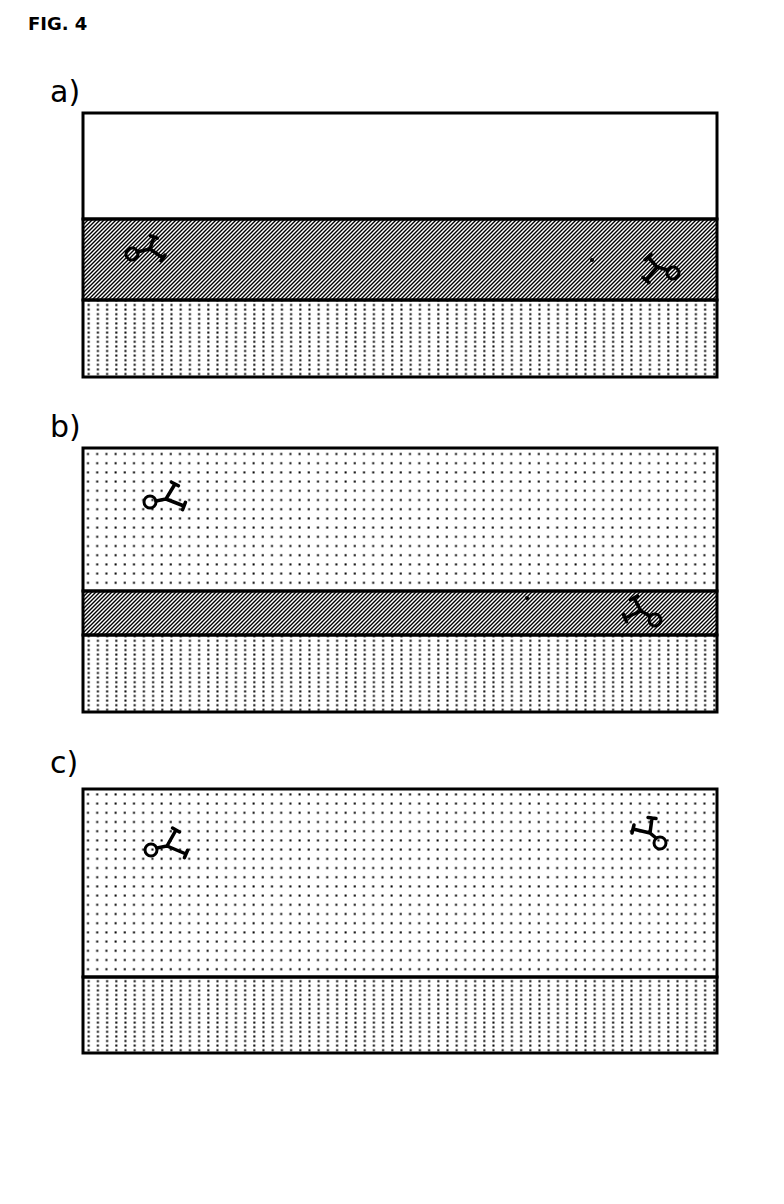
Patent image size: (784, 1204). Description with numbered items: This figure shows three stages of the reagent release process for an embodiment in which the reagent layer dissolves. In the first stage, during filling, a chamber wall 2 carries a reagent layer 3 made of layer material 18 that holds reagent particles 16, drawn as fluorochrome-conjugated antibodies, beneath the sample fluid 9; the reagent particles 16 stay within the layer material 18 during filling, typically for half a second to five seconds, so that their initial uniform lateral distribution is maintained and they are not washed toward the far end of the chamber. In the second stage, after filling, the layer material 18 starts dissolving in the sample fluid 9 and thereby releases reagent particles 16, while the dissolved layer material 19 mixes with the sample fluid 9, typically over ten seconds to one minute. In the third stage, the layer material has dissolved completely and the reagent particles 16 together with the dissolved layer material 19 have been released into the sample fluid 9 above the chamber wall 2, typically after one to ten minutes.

The chamber wall 2 is at (400, 676).
The reagent layer 3 is at (418, 259).
The sample fluid 9 is at (400, 166).
The reagent particles 16 is at (190, 847).
The layer material 18 is at (592, 260).
The dissolved layer material 19 is at (400, 712).